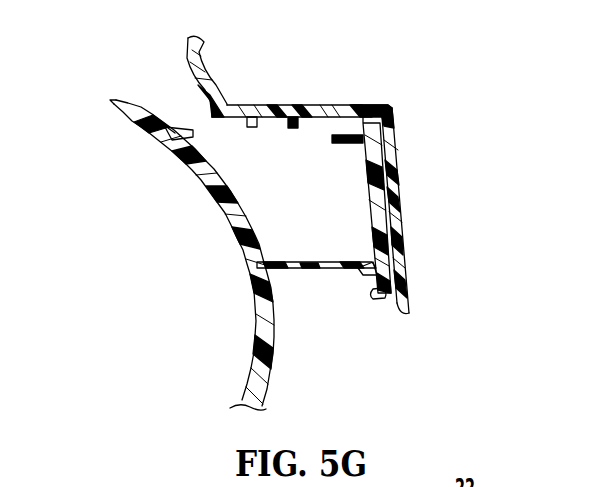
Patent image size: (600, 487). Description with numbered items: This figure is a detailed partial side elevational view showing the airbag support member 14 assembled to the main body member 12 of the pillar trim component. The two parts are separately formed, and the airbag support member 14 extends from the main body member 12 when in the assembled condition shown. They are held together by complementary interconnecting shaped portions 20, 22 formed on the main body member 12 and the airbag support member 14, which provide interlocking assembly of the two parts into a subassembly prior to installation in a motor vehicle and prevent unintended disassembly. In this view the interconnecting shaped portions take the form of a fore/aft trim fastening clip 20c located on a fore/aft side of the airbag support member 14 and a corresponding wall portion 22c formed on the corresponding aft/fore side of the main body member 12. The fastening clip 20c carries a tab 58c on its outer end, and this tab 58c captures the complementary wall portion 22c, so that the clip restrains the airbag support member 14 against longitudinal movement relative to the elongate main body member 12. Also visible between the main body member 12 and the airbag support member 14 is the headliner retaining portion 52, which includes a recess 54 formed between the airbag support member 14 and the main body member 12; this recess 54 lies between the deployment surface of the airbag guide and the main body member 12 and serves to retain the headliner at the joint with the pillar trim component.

The main body member 12 is at (255, 335).
The airbag support member 14 is at (200, 44).
The complementary interconnecting shaped portion 20 is at (366, 317).
The fore/aft trim fastening clip 20c is at (401, 317).
The complementary interconnecting shaped portion 22 is at (343, 260).
The wall portion 22c is at (375, 275).
The headliner retaining portion 52 is at (168, 84).
The recess 54 is at (127, 95).
The tab 58c is at (379, 300).